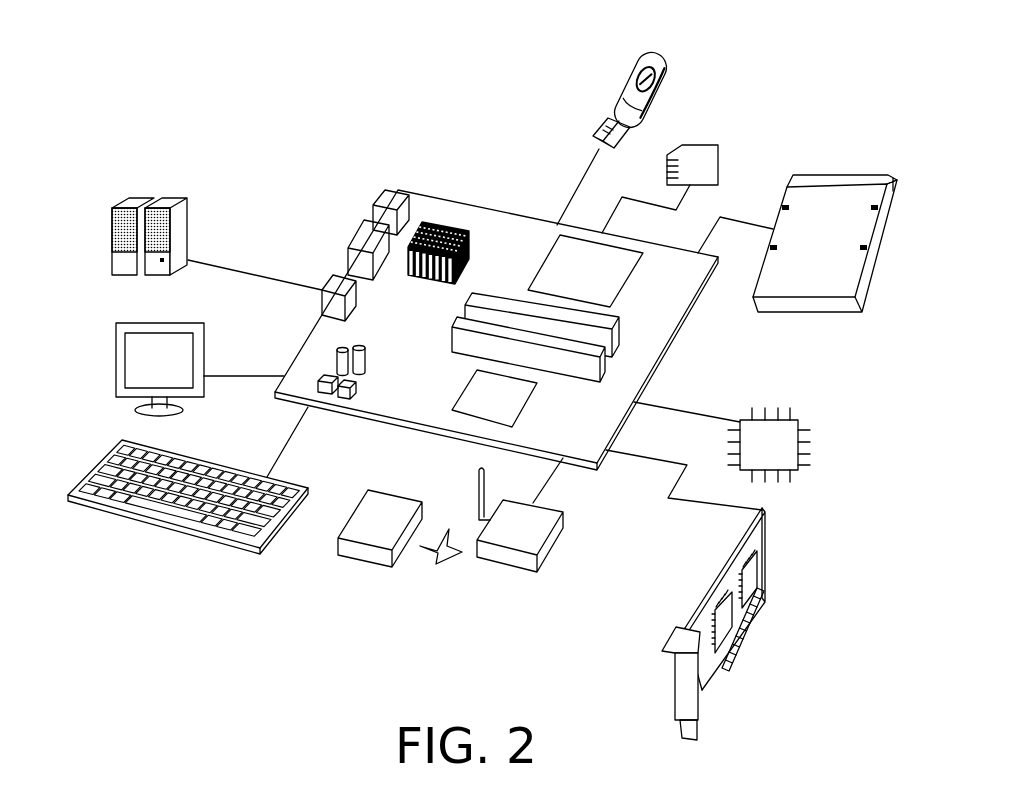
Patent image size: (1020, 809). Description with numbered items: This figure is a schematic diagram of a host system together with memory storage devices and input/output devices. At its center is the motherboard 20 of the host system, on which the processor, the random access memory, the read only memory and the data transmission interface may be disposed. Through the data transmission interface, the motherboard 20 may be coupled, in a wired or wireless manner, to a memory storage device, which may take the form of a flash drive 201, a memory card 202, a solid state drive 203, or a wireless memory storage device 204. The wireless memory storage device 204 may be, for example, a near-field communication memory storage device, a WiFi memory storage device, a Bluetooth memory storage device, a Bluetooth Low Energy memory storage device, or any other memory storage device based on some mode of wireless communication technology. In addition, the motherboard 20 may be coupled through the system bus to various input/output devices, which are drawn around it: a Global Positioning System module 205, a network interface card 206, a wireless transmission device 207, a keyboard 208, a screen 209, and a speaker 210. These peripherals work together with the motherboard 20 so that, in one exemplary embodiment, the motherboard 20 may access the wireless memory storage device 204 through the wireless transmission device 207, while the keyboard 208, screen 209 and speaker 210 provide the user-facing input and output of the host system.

The motherboard 20 is at (498, 228).
The flash drive 201 is at (623, 85).
The memory card 202 is at (718, 151).
The solid state drive 203 is at (842, 174).
The wireless memory storage device 204 is at (353, 505).
The Global Positioning System module 205 is at (810, 440).
The network interface card 206 is at (767, 568).
The wireless transmission device 207 is at (575, 550).
The keyboard 208 is at (195, 533).
The screen 209 is at (116, 380).
The speaker 210 is at (112, 260).